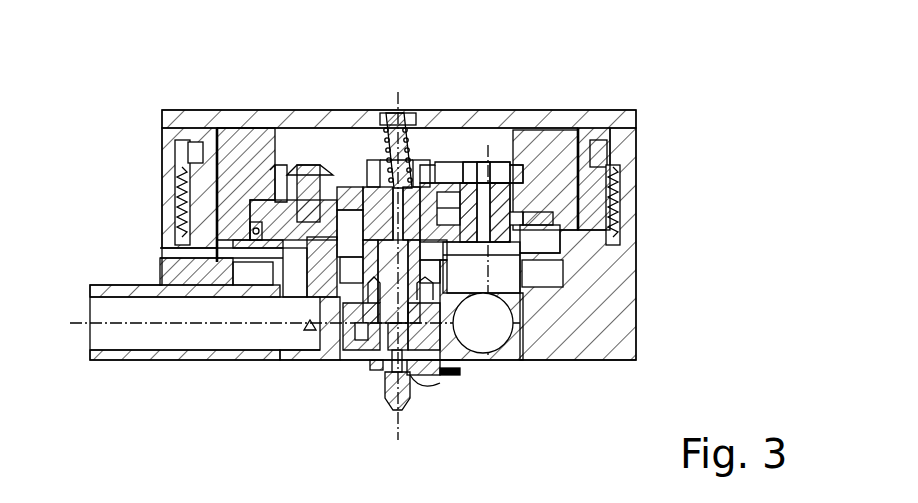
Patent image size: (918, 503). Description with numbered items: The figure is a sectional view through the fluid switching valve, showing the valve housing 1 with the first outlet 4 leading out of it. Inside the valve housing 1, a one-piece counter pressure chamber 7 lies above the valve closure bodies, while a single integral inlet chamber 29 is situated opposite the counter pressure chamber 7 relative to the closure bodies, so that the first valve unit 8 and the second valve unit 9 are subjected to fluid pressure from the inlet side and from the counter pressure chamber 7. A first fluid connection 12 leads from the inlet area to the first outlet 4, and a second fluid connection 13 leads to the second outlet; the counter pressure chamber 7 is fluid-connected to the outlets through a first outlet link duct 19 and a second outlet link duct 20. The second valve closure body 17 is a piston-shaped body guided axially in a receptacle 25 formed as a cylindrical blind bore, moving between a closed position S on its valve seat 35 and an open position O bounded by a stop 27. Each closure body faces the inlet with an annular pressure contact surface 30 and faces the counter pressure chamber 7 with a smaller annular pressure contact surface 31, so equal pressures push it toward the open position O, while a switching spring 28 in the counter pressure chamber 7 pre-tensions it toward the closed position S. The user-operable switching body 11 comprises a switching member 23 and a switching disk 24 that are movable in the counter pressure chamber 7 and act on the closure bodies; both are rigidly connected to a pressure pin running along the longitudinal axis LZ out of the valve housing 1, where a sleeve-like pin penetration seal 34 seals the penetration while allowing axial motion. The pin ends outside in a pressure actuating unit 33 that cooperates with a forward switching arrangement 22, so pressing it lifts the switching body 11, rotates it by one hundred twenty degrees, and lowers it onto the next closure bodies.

The valve housing 1 is at (636, 135).
The first outlet 4 is at (100, 337).
The counter pressure chamber 7 is at (480, 160).
The first valve unit 8 is at (333, 160).
The second valve unit 9 is at (558, 127).
The switching body 11 is at (363, 300).
The first fluid connection 12 is at (287, 258).
The second fluid connection 13 is at (545, 277).
The second valve closure body 17 is at (519, 184).
The first outlet link duct 19 is at (290, 168).
The second outlet link duct 20 is at (492, 218).
The forward switching arrangement 22 is at (420, 383).
The switching member 23 is at (487, 160).
The switching disk 24 is at (500, 108).
The receptacle 25 is at (265, 212).
The stop 27 is at (262, 205).
The switching spring 28 is at (382, 140).
The inlet chamber 29 is at (548, 273).
The pressure contact surface on inlet side 30 is at (307, 235).
The pressure contact surface on counter pressure side 31 is at (285, 195).
The pressure actuating unit 33 is at (392, 412).
The pin penetration seal 34 is at (383, 305).
The valve seat 35 is at (335, 250).
The closed position S is at (527, 233).
The open position O is at (252, 228).
The longitudinal axis LZ is at (398, 90).